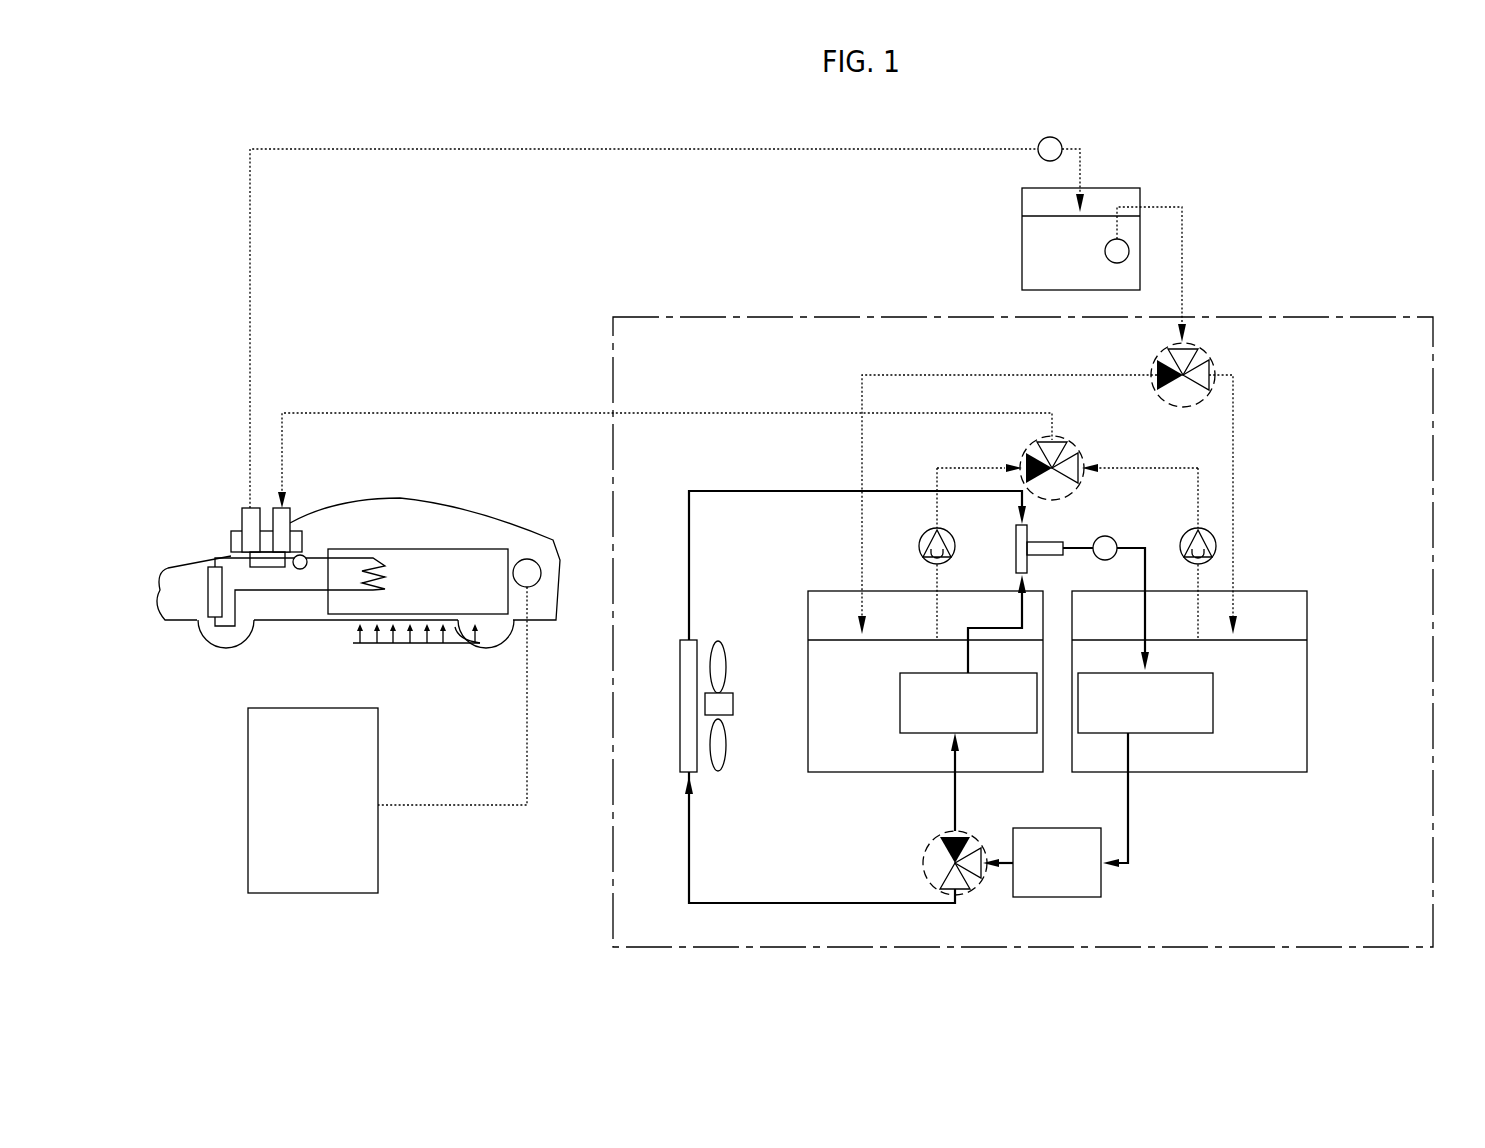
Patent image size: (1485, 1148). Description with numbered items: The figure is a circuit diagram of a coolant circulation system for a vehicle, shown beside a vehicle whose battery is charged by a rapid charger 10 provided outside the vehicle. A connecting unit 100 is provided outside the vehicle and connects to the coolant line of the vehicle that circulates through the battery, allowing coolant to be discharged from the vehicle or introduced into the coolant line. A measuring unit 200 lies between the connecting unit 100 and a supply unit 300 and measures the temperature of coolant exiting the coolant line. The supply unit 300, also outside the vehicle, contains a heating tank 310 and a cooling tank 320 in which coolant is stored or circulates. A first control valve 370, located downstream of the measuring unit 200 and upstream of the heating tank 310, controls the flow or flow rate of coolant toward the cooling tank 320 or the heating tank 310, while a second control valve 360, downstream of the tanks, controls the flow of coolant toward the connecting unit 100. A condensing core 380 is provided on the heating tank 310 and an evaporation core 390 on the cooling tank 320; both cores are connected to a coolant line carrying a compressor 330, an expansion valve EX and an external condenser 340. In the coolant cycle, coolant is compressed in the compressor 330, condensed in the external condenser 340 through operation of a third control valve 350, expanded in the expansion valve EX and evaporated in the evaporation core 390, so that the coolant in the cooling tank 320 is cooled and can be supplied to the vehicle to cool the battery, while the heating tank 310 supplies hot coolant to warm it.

The rapid charger 10 is at (248, 805).
The connecting unit 100 is at (248, 520).
The measuring unit 200 is at (1118, 188).
The supply unit 300 is at (1302, 317).
The heating tank 310 is at (850, 773).
The cooling tank 320 is at (1308, 742).
The compressor 330 is at (1101, 888).
The external condenser 340 is at (680, 753).
The third control valve 350 is at (923, 865).
The second control valve 360 is at (1070, 440).
The first control valve 370 is at (1215, 368).
The condensing core 380 is at (900, 703).
The evaporation core 390 is at (1213, 703).
The expansion valve EX is at (1105, 536).